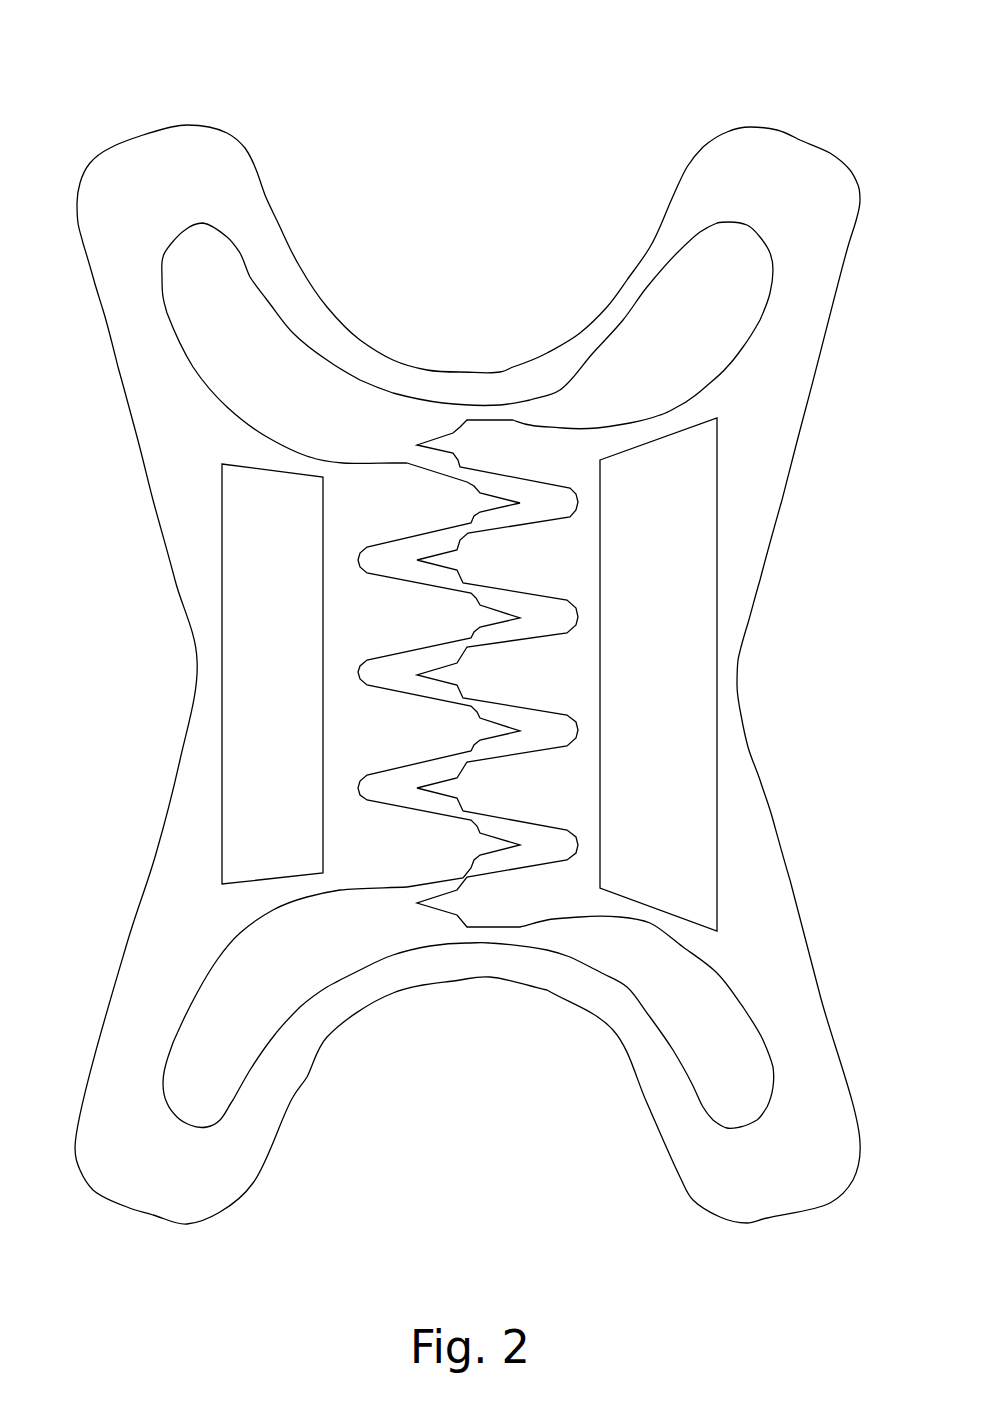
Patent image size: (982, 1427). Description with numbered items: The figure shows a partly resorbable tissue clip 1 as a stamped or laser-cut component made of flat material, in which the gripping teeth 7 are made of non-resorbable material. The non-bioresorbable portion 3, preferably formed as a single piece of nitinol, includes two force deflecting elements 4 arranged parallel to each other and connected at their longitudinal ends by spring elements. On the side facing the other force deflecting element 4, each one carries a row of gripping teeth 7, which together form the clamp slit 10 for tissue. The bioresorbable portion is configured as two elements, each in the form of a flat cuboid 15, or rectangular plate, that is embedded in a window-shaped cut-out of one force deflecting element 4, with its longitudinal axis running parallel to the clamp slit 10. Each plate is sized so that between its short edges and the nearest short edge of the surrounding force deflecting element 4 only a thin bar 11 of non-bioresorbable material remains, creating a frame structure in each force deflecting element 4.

The tissue clip 1 is at (783, 113).
The non-bioresorbable portion 3 is at (747, 1195).
The force deflecting element 4 is at (202, 740).
The gripping teeth 7 is at (542, 447).
The clamp slit 10 is at (387, 795).
The thin bar 11 is at (285, 887).
The flat cuboid 15 is at (690, 670).